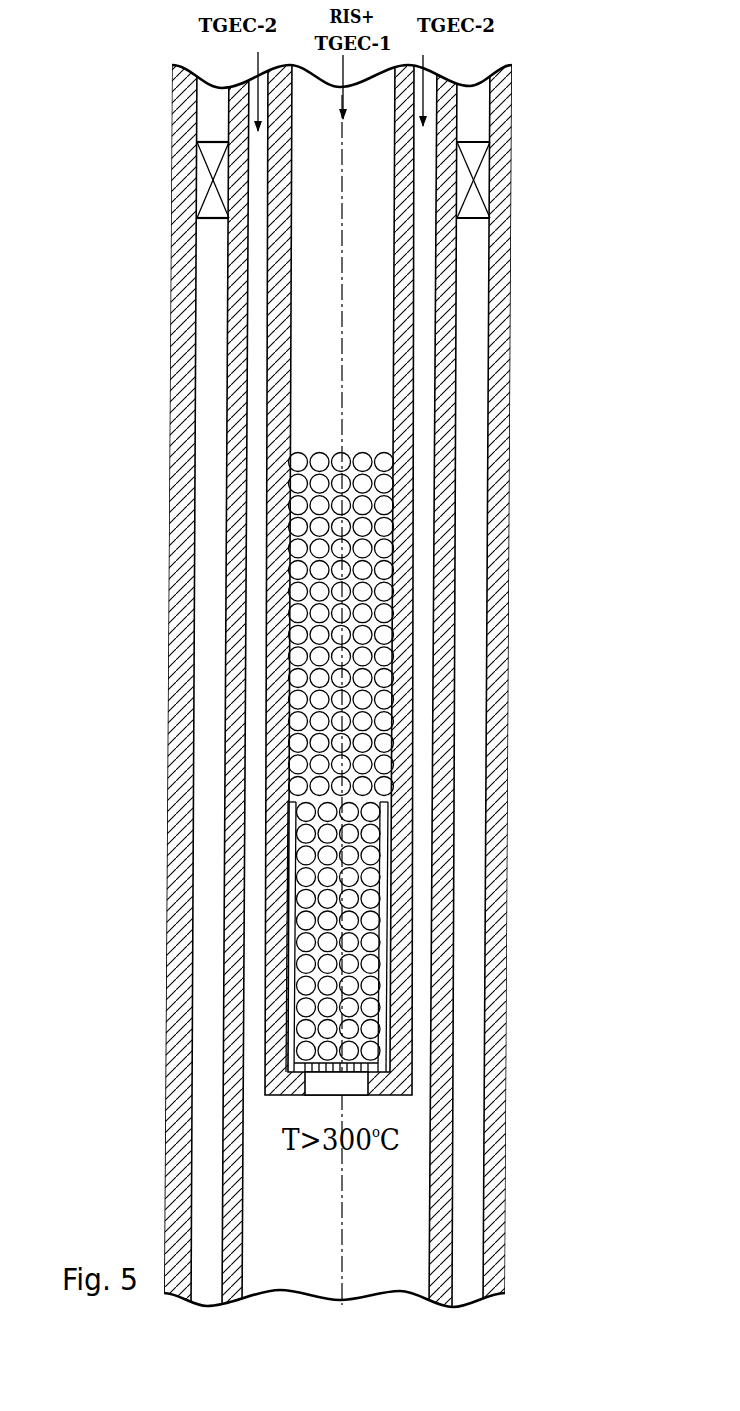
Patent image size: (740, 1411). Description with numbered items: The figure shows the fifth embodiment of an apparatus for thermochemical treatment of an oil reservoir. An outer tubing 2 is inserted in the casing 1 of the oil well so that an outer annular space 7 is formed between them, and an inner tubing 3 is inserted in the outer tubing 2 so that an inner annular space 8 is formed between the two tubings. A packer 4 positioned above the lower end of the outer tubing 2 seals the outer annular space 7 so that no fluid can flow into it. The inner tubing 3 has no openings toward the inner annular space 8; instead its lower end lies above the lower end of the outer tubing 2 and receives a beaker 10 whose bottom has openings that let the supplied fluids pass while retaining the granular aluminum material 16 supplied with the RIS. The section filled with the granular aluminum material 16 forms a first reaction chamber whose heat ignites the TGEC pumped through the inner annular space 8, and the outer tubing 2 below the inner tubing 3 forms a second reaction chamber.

The casing 1 is at (389, 682).
The outer tubing 2 is at (237, 625).
The inner tubing 3 is at (403, 838).
The packer 4 is at (216, 186).
The outer annular space 7 is at (209, 501).
The inner annular space 8 is at (253, 446).
The beaker 10 is at (294, 961).
The granular aluminum material 16 is at (331, 899).